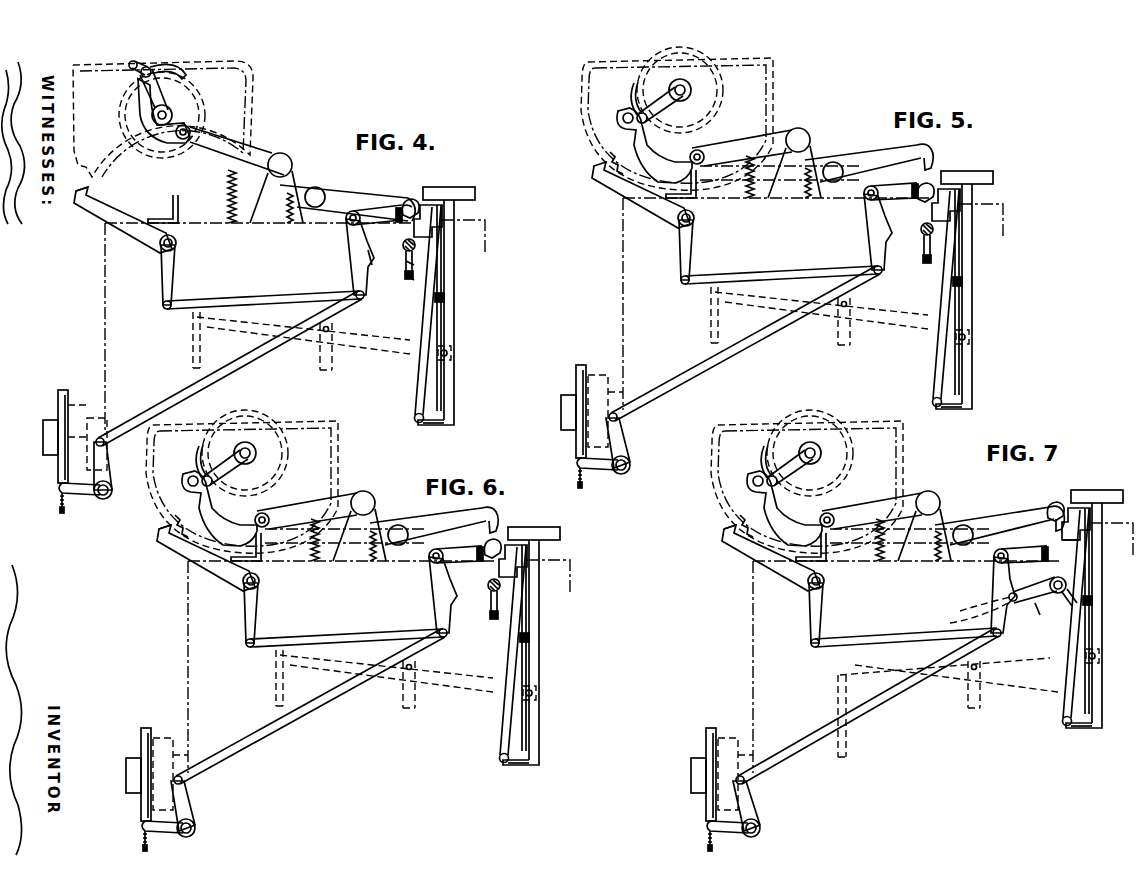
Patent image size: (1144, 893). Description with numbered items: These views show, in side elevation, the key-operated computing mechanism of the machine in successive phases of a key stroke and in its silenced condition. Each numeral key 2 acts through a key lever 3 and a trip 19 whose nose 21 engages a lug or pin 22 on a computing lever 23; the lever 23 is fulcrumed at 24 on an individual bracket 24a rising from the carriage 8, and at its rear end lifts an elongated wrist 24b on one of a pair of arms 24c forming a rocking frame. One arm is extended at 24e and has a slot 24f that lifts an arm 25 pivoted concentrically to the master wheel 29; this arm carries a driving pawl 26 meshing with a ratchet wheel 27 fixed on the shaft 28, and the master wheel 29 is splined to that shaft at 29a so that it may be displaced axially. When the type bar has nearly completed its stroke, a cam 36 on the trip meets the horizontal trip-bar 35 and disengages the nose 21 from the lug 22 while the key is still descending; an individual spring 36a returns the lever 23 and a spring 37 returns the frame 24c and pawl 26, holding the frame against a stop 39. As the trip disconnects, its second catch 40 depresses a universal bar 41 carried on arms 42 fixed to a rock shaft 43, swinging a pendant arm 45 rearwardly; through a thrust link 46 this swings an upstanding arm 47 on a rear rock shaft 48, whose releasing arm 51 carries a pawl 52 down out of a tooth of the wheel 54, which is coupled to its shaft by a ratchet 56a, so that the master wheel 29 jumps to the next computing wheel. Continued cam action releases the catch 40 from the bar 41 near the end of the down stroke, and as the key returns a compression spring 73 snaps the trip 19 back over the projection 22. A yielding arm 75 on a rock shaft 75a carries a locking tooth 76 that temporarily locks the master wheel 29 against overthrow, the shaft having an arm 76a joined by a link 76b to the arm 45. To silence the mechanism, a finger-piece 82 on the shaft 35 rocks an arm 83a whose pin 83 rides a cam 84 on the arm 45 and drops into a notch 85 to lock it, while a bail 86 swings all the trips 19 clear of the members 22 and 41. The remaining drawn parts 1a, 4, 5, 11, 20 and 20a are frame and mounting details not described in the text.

In FIG. 4, the frame upright 1a is at (455, 312).
In FIG. 4, the numeral key 2 is at (459, 178).
In FIG. 5, the numeral key 2 is at (973, 290).
In FIG. 6, the numeral key 2 is at (531, 636).
In FIG. 7, the numeral key 2 is at (1094, 598).
In FIG. 4, the key lever 3 is at (303, 344).
In FIG. 4, the support leg 4 is at (315, 346).
In FIG. 4, the support leg 5 is at (184, 340).
In FIG. 4, the carriage 8 is at (91, 329).
In FIG. 5, the carriage 8 is at (610, 304).
In FIG. 6, the carriage 8 is at (177, 667).
In FIG. 7, the carriage 8 is at (742, 667).
In FIG. 4, the bracket 11 is at (87, 431).
In FIG. 4, the trip 19 is at (414, 311).
In FIG. 5, the trip 19 is at (935, 299).
In FIG. 6, the trip 19 is at (503, 655).
In FIG. 7, the trip 19 is at (1067, 618).
In FIG. 4, the pivot pin 20 is at (411, 430).
In FIG. 4, the foot bracket 20a is at (438, 436).
In FIG. 4, the nose 21 is at (450, 217).
In FIG. 5, the nose 21 is at (931, 207).
In FIG. 6, the nose 21 is at (538, 558).
In FIG. 7, the nose 21 is at (1099, 524).
In FIG. 4, the lug or pin 22 is at (395, 223).
In FIG. 5, the lug or pin 22 is at (942, 158).
In FIG. 6, the lug or pin 22 is at (504, 520).
In FIG. 7, the lug or pin 22 is at (1046, 523).
In FIG. 4, the computing lever 23 is at (296, 165).
In FIG. 5, the computing lever 23 is at (844, 163).
In FIG. 7, the computing lever 23 is at (976, 526).
In FIG. 4, the fulcrum 24 is at (347, 186).
In FIG. 4, the bracket 24a is at (281, 209).
In FIG. 4, the elongated wrist 24b is at (169, 146).
In FIG. 5, the elongated wrist 24b is at (700, 141).
In FIG. 7, the elongated wrist 24b is at (844, 504).
In FIG. 4, the arm 24c is at (249, 151).
In FIG. 5, the arm 24c is at (742, 142).
In FIG. 6, the arm 24c is at (307, 504).
In FIG. 7, the arm 24c is at (889, 505).
In FIG. 4, the extension of arm 24e is at (138, 111).
In FIG. 4, the slot 24f is at (117, 78).
In FIG. 4, the arm 25 is at (184, 89).
In FIG. 4, the driving pawl 26 is at (182, 79).
In FIG. 5, the driving pawl 26 is at (623, 99).
In FIG. 6, the driving pawl 26 is at (189, 465).
In FIG. 7, the driving pawl 26 is at (754, 465).
In FIG. 4, the ratchet wheel 27 is at (152, 115).
In FIG. 5, the ratchet wheel 27 is at (692, 90).
In FIG. 6, the ratchet wheel 27 is at (258, 453).
In FIG. 7, the ratchet wheel 27 is at (822, 453).
In FIG. 4, the shaft 28 is at (134, 116).
In FIG. 4, the master wheel 29 is at (184, 119).
In FIG. 5, the master wheel 29 is at (695, 124).
In FIG. 6, the master wheel 29 is at (240, 487).
In FIG. 7, the master wheel 29 is at (821, 487).
In FIG. 4, the spline 29a is at (193, 118).
In FIG. 4, the trip-bar 35 is at (438, 239).
In FIG. 5, the trip-bar 35 is at (915, 234).
In FIG. 6, the trip-bar 35 is at (481, 594).
In FIG. 7, the trip-bar 35 is at (1089, 582).
In FIG. 4, the cam or tappet 36 is at (405, 276).
In FIG. 5, the cam or tappet 36 is at (923, 256).
In FIG. 6, the cam or tappet 36 is at (485, 616).
In FIG. 7, the cam or tappet 36 is at (1097, 546).
In FIG. 4, the individual spring 36a is at (275, 208).
In FIG. 5, the individual spring 36a is at (791, 183).
In FIG. 4, the spring 37 is at (219, 196).
In FIG. 5, the spring 37 is at (731, 177).
In FIG. 4, the stop 39 is at (163, 198).
In FIG. 4, the second nose or catch 40 is at (414, 182).
In FIG. 5, the second nose or catch 40 is at (923, 183).
In FIG. 6, the second nose or catch 40 is at (487, 544).
In FIG. 7, the second nose or catch 40 is at (1054, 501).
In FIG. 4, the universal bar 41 is at (392, 194).
In FIG. 5, the universal bar 41 is at (894, 183).
In FIG. 6, the universal bar 41 is at (476, 566).
In FIG. 7, the universal bar 41 is at (1051, 564).
In FIG. 4, the arm 42 is at (377, 196).
In FIG. 6, the arm 42 is at (458, 544).
In FIG. 7, the arm 42 is at (1023, 545).
In FIG. 4, the rock shaft 43 is at (336, 229).
In FIG. 6, the rock shaft 43 is at (415, 569).
In FIG. 7, the rock shaft 43 is at (983, 567).
In FIG. 4, the pendant arm 45 is at (338, 259).
In FIG. 5, the pendant arm 45 is at (865, 234).
In FIG. 6, the pendant arm 45 is at (431, 597).
In FIG. 7, the pendant arm 45 is at (1003, 597).
In FIG. 4, the thrust link 46 is at (229, 368).
In FIG. 5, the thrust link 46 is at (744, 343).
In FIG. 6, the thrust link 46 is at (309, 706).
In FIG. 7, the thrust link 46 is at (867, 706).
In FIG. 4, the upstanding arm 47 is at (115, 466).
In FIG. 5, the upstanding arm 47 is at (632, 443).
In FIG. 6, the upstanding arm 47 is at (195, 806).
In FIG. 7, the upstanding arm 47 is at (753, 806).
In FIG. 4, the rock shaft 48 is at (100, 502).
In FIG. 6, the rock shaft 48 is at (204, 830).
In FIG. 7, the rock shaft 48 is at (765, 828).
In FIG. 4, the releasing arm 51 is at (61, 487).
In FIG. 5, the releasing arm 51 is at (597, 480).
In FIG. 6, the releasing arm 51 is at (148, 823).
In FIG. 7, the releasing arm 51 is at (746, 839).
In FIG. 4, the pawl 52 is at (57, 508).
In FIG. 5, the pawl 52 is at (564, 482).
In FIG. 6, the pawl 52 is at (132, 843).
In FIG. 7, the pawl 52 is at (698, 843).
In FIG. 4, the wheel 54 is at (48, 436).
In FIG. 5, the wheel 54 is at (575, 401).
In FIG. 6, the wheel 54 is at (136, 759).
In FIG. 7, the wheel 54 is at (701, 762).
In FIG. 4, the ratchet 56a is at (37, 437).
In FIG. 4, the compression spring 73 is at (455, 308).
In FIG. 6, the compression spring 73 is at (508, 648).
In FIG. 4, the yielding arm 75 is at (123, 220).
In FIG. 5, the yielding arm 75 is at (639, 195).
In FIG. 6, the yielding arm 75 is at (206, 558).
In FIG. 7, the yielding arm 75 is at (770, 558).
In FIG. 4, the rock shaft 75a is at (187, 238).
In FIG. 6, the rock shaft 75a is at (278, 584).
In FIG. 7, the rock shaft 75a is at (833, 584).
In FIG. 4, the locking tooth 76 is at (79, 182).
In FIG. 6, the locking tooth 76 is at (152, 537).
In FIG. 7, the locking tooth 76 is at (720, 522).
In FIG. 4, the arm 76a is at (187, 277).
In FIG. 5, the arm 76a is at (707, 252).
In FIG. 6, the arm 76a is at (227, 615).
In FIG. 7, the arm 76a is at (797, 615).
In FIG. 4, the link 76b is at (263, 292).
In FIG. 5, the link 76b is at (781, 267).
In FIG. 6, the link 76b is at (346, 631).
In FIG. 7, the link 76b is at (906, 631).
In FIG. 7, the hand lever or finger-piece 82 is at (980, 607).
In FIG. 7, the pin 83 is at (1035, 598).
In FIG. 7, the arm 83a is at (1027, 623).
In FIG. 4, the cam 84 is at (344, 260).
In FIG. 7, the cam 84 is at (1019, 586).
In FIG. 4, the notch 85 is at (398, 253).
In FIG. 7, the notch 85 is at (968, 618).
In FIG. 4, the bail or rod 86 is at (396, 285).
In FIG. 7, the bail or rod 86 is at (1065, 614).